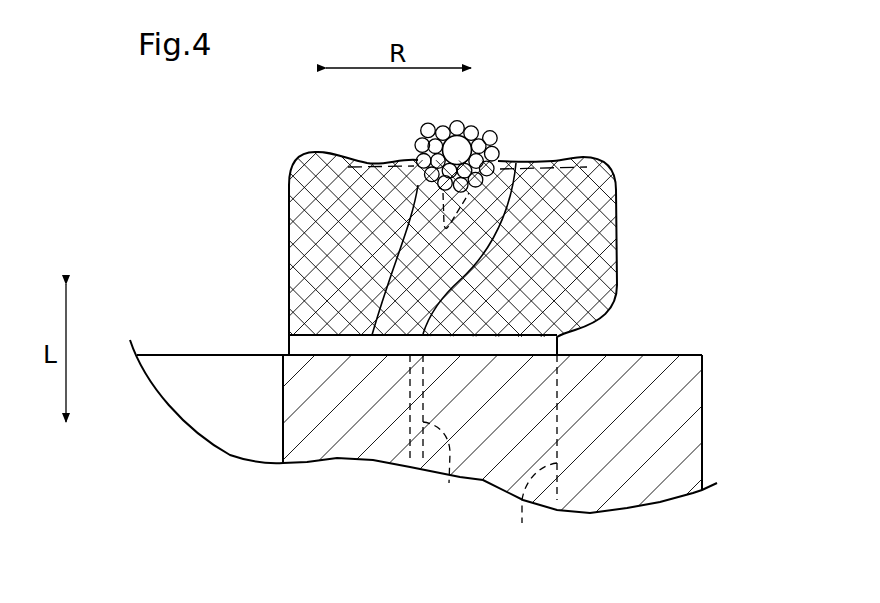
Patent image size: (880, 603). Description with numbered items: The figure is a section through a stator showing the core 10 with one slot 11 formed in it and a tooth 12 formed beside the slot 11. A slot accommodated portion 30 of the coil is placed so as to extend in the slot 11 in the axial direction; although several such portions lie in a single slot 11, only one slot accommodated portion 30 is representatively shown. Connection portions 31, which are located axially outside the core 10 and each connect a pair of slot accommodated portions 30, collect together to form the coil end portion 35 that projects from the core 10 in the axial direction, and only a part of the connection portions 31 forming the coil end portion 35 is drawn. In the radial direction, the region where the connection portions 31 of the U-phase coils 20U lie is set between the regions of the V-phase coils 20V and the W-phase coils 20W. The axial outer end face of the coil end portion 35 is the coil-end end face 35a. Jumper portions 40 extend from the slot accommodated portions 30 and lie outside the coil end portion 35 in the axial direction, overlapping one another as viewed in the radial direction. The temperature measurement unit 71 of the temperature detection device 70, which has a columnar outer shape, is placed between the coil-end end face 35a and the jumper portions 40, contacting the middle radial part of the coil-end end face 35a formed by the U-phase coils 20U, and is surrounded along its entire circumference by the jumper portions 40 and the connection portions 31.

The core 10 is at (478, 416).
The slot 11 is at (532, 454).
The tooth 12 is at (283, 427).
The U-phase coil 20U is at (507, 162).
The V-phase coil 20V is at (601, 195).
The W-phase coil 20W is at (307, 180).
The slot accommodated portion 30 is at (432, 434).
The connection portion 31 is at (449, 228).
The coil end portion 35 is at (451, 214).
The coil-end end face 35a is at (552, 152).
The jumper portion 40 is at (426, 128).
The temperature detection device 70 is at (503, 102).
The temperature measurement unit 71 is at (457, 147).